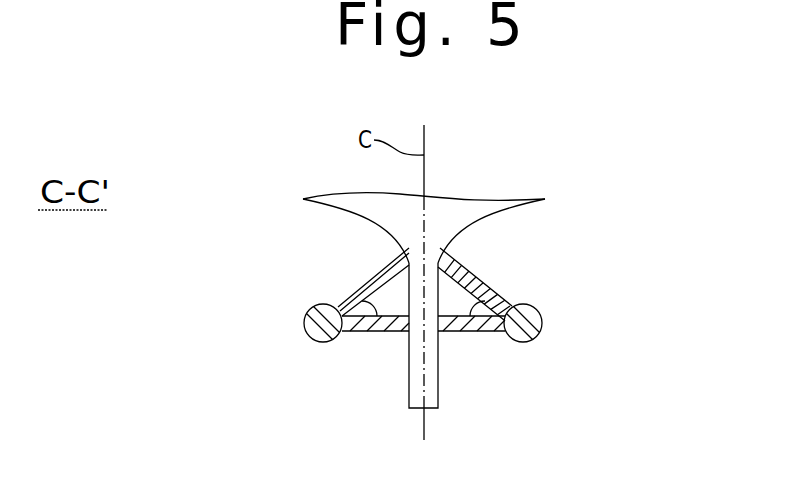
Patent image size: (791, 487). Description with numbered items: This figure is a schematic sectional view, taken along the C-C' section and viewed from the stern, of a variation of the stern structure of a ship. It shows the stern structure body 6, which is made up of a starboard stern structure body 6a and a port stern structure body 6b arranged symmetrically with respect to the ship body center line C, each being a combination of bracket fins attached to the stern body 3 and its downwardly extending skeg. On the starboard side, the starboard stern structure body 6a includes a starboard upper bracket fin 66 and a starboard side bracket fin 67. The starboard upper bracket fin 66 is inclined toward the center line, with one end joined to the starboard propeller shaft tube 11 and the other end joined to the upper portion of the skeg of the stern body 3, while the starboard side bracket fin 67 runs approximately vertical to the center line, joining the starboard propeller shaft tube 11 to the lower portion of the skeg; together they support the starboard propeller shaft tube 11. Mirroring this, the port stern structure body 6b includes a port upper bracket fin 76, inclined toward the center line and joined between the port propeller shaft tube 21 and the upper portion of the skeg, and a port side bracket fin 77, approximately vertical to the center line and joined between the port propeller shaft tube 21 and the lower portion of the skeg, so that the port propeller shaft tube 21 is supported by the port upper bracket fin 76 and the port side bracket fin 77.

The stern body 3 is at (465, 207).
The stern structure body 6 is at (613, 347).
The starboard stern structure body 6a is at (542, 266).
The port stern structure body 6b is at (304, 264).
The starboard propeller shaft tube 11 is at (524, 342).
The port propeller shaft tube 21 is at (323, 342).
The starboard upper bracket fin 66 is at (470, 267).
The starboard side bracket fin 67 is at (530, 296).
The port upper bracket fin 76 is at (378, 268).
The port side bracket fin 77 is at (362, 301).